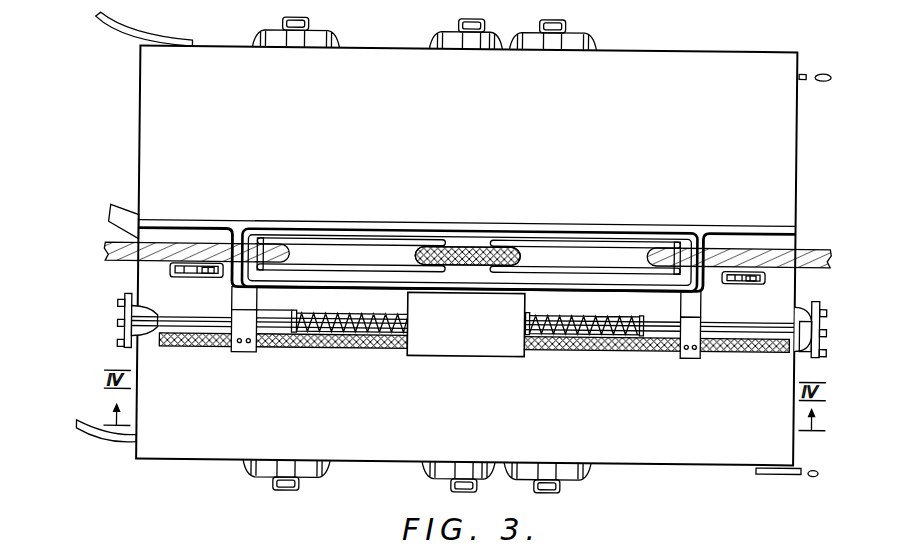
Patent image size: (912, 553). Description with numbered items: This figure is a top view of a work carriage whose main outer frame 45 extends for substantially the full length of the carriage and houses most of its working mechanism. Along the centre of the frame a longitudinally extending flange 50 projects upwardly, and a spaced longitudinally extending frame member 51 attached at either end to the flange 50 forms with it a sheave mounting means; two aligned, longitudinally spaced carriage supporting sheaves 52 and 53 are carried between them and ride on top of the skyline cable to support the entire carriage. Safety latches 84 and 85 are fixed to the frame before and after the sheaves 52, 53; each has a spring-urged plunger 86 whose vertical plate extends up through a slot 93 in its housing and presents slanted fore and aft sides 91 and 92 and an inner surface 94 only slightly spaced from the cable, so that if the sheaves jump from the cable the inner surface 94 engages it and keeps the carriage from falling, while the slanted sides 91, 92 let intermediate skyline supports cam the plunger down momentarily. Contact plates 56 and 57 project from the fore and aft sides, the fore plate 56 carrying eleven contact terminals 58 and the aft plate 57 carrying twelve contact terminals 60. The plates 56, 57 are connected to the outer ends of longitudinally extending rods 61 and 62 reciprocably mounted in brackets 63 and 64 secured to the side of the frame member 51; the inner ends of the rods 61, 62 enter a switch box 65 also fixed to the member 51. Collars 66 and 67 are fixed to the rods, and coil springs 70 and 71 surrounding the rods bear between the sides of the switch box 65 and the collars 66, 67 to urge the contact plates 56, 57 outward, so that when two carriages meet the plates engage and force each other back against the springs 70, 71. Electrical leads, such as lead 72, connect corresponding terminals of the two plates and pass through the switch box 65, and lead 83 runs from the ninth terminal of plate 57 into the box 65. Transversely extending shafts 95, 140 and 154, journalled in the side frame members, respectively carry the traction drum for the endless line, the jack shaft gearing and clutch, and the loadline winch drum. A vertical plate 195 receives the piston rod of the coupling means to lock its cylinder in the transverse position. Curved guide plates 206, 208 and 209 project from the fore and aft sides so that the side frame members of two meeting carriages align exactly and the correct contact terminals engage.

The main outer frame 45 is at (699, 48).
The flange 50 is at (243, 232).
The frame member 51 is at (584, 290).
The carriage supporting sheave 52 is at (383, 258).
The carriage supporting sheave 53 is at (568, 257).
The contact plate 56 is at (128, 297).
The contact plate 57 is at (814, 304).
The contact terminals 58 is at (118, 346).
The contact terminals 60 is at (803, 350).
The rod 61 is at (284, 316).
The rod 62 is at (676, 322).
The bracket 63 is at (238, 354).
The bracket 64 is at (697, 357).
The switch box 65 is at (467, 346).
The collar 66 is at (289, 349).
The collar 67 is at (642, 348).
The coil spring 70 is at (352, 318).
The coil spring 71 is at (570, 350).
The electrical lead 72 is at (197, 350).
The electrical lead 83 is at (745, 352).
The safety latch 84 is at (212, 276).
The safety latch 85 is at (743, 283).
The plunger 86 is at (207, 270).
The slanted fore side 91 is at (193, 268).
The slanted aft side 92 is at (209, 270).
The slot 93 is at (172, 279).
The inner surface 94 is at (172, 266).
The shaft 95 is at (456, 27).
The jack shaft 140 is at (307, 24).
The shaft 154 is at (566, 27).
The vertical plate 195 is at (117, 214).
The curved guide plate 206 is at (88, 430).
The curved guide plate 208 is at (812, 474).
The curved guide plate 209 is at (818, 80).